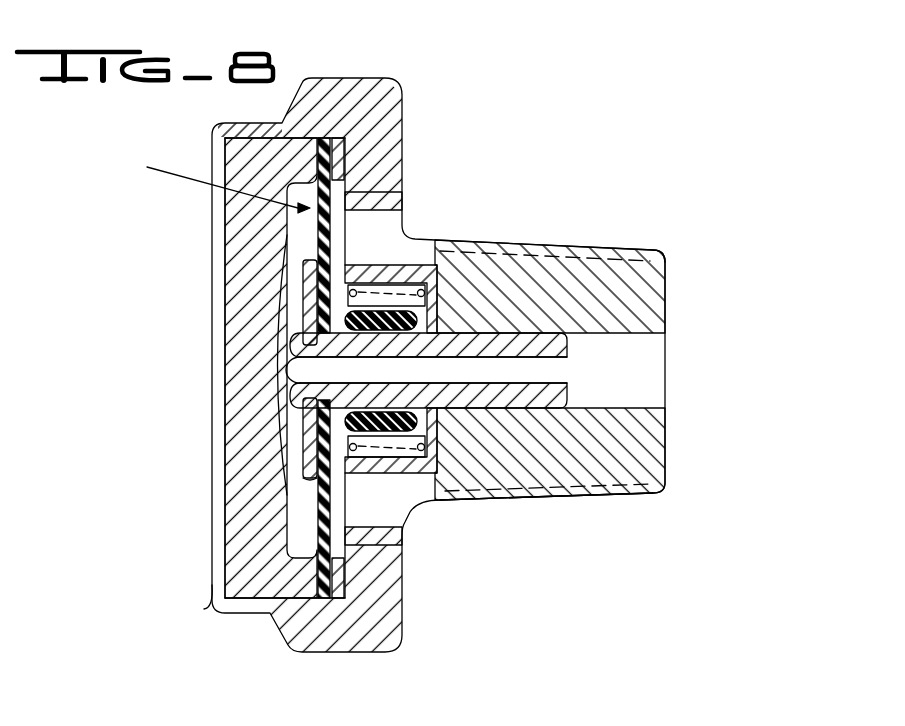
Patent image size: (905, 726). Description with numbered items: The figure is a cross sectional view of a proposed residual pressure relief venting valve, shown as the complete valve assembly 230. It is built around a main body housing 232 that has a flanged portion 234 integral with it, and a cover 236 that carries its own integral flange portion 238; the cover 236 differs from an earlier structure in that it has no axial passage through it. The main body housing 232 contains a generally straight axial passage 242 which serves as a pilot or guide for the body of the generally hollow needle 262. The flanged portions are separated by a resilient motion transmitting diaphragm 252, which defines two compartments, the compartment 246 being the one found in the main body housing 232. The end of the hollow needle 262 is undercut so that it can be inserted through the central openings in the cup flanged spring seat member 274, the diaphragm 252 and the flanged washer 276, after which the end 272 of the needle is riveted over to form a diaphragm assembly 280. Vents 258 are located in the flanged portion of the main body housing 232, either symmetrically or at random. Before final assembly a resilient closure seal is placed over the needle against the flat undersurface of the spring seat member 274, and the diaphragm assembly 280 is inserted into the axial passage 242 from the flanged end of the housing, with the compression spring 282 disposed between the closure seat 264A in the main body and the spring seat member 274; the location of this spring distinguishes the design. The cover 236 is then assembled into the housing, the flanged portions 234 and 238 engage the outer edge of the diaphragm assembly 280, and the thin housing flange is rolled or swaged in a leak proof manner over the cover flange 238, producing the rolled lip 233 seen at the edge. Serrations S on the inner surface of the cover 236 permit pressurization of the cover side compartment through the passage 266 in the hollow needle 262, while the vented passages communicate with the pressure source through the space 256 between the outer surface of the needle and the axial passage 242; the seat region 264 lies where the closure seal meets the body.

The complete valve assembly 230 is at (590, 128).
The main body housing 232 is at (617, 250).
The lip 233 is at (210, 604).
The flanged portion 234 is at (395, 95).
The cover 236 is at (253, 262).
The flange portion 238 is at (280, 582).
The axial passage 242 is at (630, 362).
The compartment 246 is at (350, 222).
The resilient motion transmitting diaphragm 252 is at (300, 498).
The space 256 is at (567, 500).
The vents 258 is at (363, 266).
The hollow needle 262 is at (653, 250).
The thread 264 is at (562, 248).
The closure seat 264A is at (381, 484).
The passage 266 is at (553, 372).
The end of the hollow needle 272 is at (287, 380).
The cup flanged spring seat member 274 is at (403, 220).
The flanged washer 276 is at (302, 288).
The diaphragm assembly 280 is at (195, 180).
The compression spring 282 is at (537, 412).
The serrations S is at (290, 358).